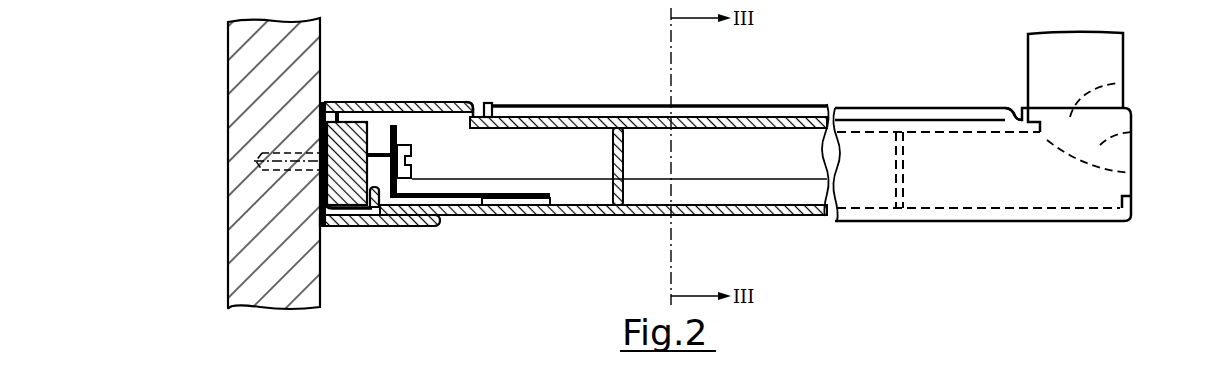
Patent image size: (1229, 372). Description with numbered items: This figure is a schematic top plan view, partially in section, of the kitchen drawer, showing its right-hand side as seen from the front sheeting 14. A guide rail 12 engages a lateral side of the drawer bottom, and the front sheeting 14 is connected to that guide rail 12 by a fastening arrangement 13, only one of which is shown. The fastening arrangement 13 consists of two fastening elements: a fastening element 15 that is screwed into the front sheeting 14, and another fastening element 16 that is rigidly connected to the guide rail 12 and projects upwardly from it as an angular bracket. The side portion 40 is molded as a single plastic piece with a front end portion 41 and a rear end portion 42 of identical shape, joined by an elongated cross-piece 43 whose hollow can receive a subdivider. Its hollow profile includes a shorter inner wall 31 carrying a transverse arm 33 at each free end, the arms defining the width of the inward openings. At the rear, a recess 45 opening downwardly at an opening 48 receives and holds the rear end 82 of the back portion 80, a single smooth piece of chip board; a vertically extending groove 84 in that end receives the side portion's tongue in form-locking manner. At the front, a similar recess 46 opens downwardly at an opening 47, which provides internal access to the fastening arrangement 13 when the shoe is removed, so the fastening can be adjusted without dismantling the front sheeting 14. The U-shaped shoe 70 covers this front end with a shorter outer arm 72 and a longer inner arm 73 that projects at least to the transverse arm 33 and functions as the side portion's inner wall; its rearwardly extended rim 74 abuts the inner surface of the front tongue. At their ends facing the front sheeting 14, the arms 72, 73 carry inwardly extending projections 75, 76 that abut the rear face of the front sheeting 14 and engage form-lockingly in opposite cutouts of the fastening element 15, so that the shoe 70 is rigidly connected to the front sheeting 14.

The guide rail 12 is at (666, 163).
The fastening arrangement 13 is at (440, 157).
The front sheeting 14 is at (232, 58).
The fastening element 15 is at (322, 228).
The fastening element 16 is at (486, 202).
The inner wall 31 is at (646, 105).
The arm 33 is at (495, 104).
The side portion 40 is at (887, 222).
The front end portion 41 is at (447, 216).
The rear end portion 42 is at (1083, 222).
The cross-piece 43 is at (805, 217).
The recess 45 is at (1013, 118).
The recess 46 is at (447, 134).
The opening 47 is at (445, 101).
The opening 48 is at (1125, 82).
The shoe 70 is at (336, 92).
The outer arm 72 is at (363, 220).
The inner arm 73 is at (367, 102).
The rim 74 is at (487, 102).
The projection 75 is at (323, 203).
The projection 76 is at (318, 119).
The back portion 80 is at (1108, 40).
The rear end 82 is at (1132, 130).
The groove 84 is at (1132, 173).